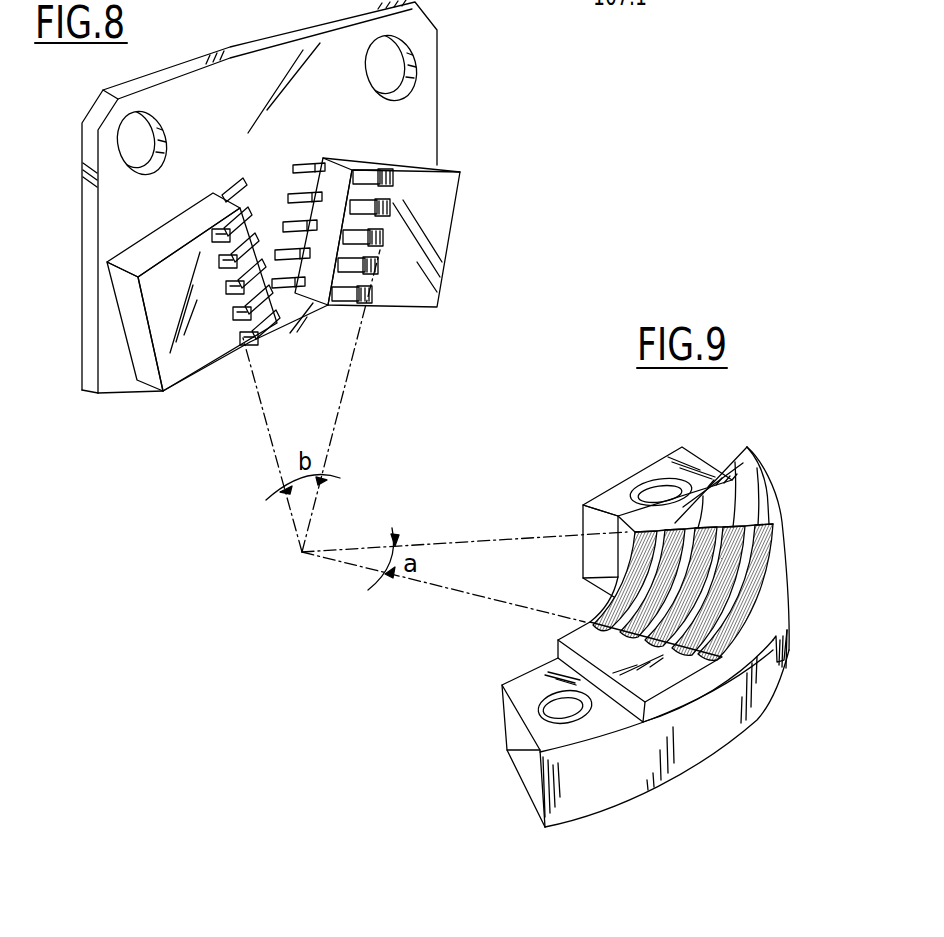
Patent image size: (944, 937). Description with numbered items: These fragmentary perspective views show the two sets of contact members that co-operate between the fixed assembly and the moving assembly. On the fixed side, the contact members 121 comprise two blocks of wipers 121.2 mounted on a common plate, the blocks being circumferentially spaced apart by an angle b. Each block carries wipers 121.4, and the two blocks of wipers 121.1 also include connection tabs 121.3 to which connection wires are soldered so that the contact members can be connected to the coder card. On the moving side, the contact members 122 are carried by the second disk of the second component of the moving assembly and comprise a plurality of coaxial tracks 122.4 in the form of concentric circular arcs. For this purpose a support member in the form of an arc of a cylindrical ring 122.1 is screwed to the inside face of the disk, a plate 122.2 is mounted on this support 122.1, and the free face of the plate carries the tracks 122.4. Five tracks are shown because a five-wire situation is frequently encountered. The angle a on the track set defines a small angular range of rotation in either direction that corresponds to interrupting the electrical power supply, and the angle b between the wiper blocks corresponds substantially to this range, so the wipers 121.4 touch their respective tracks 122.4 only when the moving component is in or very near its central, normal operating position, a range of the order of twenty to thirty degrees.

In FIG. 8, the contact members 121 is at (466, 135).
In FIG. 8, the two blocks of wipers 121.1 is at (250, 80).
In FIG. 8, the block of wipers 121.2 is at (442, 208).
In FIG. 8, the connection tabs 121.3 is at (236, 185).
In FIG. 8, the wipers 121.4 is at (380, 175).
In FIG. 9, the contact members 122 is at (598, 478).
In FIG. 9, the support member in the form of an arc of a cylindrical ring 122.1 is at (516, 737).
In FIG. 9, the plate 122.2 is at (583, 625).
In FIG. 9, the coaxial tracks 122.4 is at (732, 530).